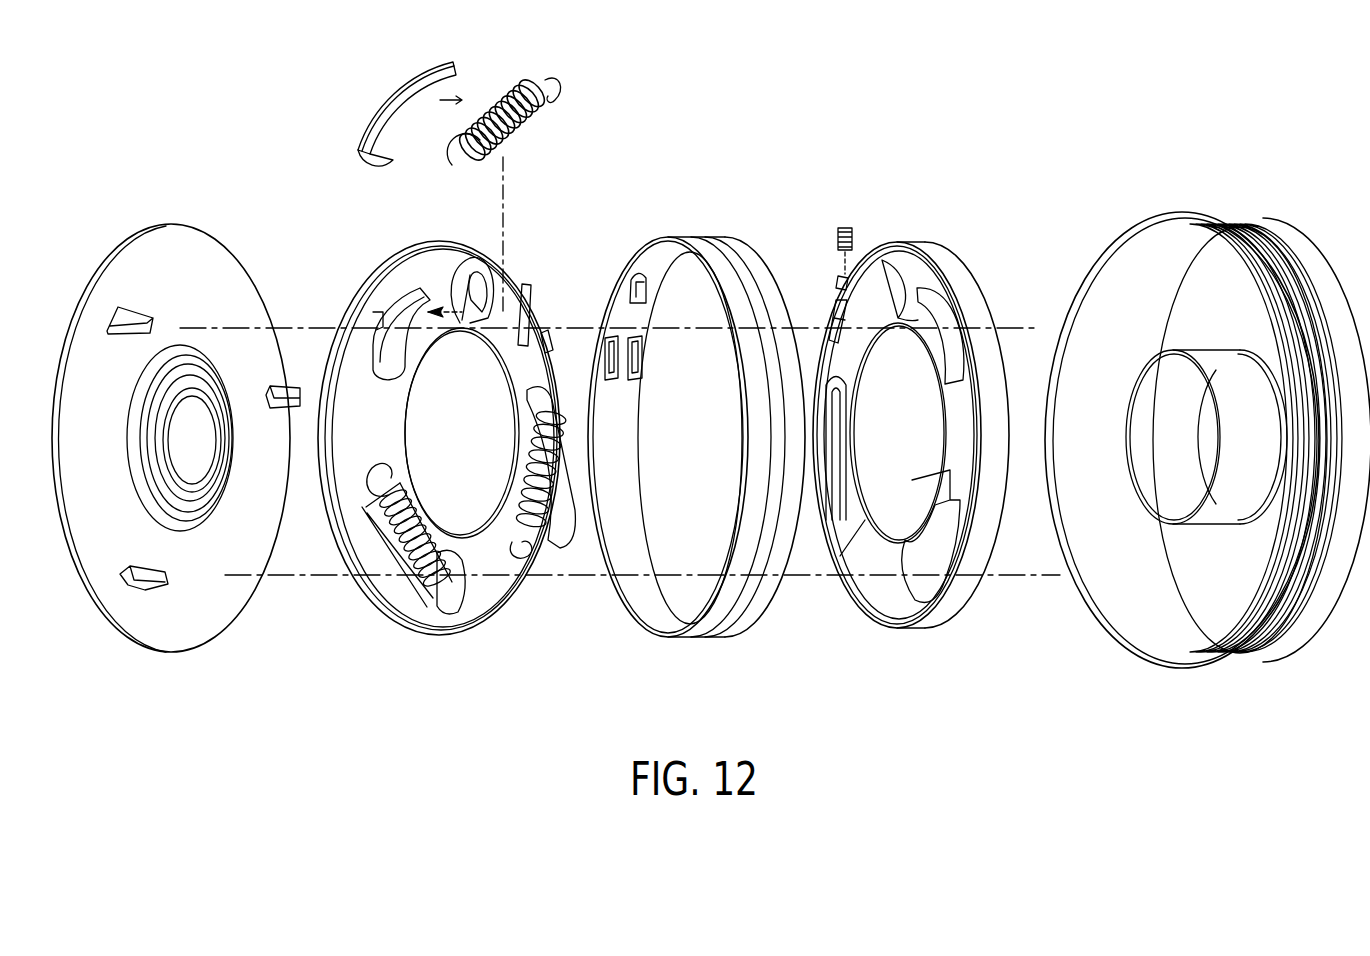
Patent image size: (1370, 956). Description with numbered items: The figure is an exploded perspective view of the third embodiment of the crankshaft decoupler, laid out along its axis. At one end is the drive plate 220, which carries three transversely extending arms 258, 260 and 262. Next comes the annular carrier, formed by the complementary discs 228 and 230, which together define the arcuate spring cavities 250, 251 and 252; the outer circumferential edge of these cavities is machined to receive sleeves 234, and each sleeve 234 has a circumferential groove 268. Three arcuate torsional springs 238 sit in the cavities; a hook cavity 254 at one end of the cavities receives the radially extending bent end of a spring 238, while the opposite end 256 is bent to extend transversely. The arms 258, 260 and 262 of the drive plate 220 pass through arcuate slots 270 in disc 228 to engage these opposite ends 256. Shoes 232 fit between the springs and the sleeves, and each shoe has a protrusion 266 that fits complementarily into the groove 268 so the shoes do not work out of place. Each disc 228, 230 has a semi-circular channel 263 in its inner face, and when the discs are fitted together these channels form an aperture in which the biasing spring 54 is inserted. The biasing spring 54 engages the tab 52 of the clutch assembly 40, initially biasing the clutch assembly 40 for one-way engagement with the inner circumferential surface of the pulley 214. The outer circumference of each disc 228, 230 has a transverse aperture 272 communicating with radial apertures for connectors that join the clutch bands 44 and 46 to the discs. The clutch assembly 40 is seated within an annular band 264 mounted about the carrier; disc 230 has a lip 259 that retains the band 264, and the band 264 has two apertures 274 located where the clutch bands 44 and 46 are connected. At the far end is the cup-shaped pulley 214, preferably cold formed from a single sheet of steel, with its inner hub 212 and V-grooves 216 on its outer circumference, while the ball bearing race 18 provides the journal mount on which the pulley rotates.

The ball bearing race 18 is at (200, 508).
The clutch assembly 40 is at (712, 237).
The clutch band 44 is at (748, 522).
The clutch band 46 is at (776, 586).
The tab 52 is at (646, 292).
The biasing spring 54 is at (854, 226).
The inner hub 212 is at (1208, 526).
The pulley 214 is at (1283, 228).
The V-grooves 216 is at (1196, 214).
The drive plate 220 is at (175, 651).
The disc 228 is at (520, 604).
The disc 230 is at (966, 618).
The shoes 232 is at (545, 72).
The sleeve 234 is at (366, 126).
The arcuate torsional spring 238 is at (530, 482).
The arcuate spring cavity 250 is at (455, 600).
The arcuate spring cavity 251 is at (472, 258).
The arcuate spring cavity 252 is at (530, 404).
The hook cavity 254 is at (490, 292).
The opposite end 256 is at (456, 596).
The arm 258 is at (140, 572).
The lip 259 is at (958, 255).
The arm 260 is at (140, 312).
The arm 262 is at (280, 410).
The semi-circular channel 263 is at (530, 296).
The annular band 264 is at (640, 618).
The protrusion 266 is at (500, 82).
The circumferential groove 268 is at (373, 162).
The arcuate slot 270 is at (384, 338).
The transverse aperture 272 is at (548, 334).
The apertures 274 is at (634, 362).